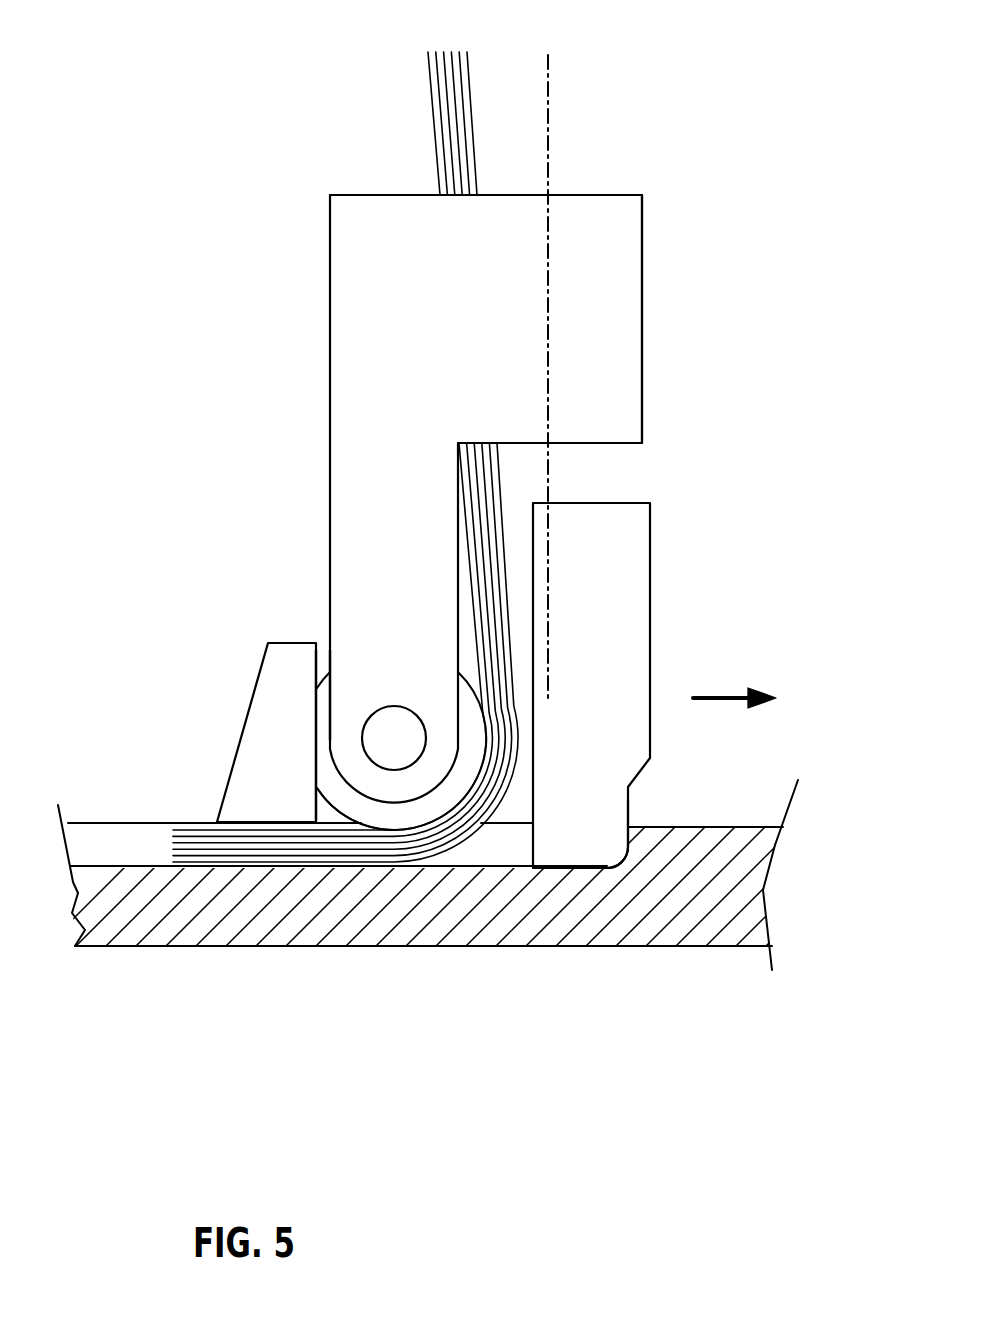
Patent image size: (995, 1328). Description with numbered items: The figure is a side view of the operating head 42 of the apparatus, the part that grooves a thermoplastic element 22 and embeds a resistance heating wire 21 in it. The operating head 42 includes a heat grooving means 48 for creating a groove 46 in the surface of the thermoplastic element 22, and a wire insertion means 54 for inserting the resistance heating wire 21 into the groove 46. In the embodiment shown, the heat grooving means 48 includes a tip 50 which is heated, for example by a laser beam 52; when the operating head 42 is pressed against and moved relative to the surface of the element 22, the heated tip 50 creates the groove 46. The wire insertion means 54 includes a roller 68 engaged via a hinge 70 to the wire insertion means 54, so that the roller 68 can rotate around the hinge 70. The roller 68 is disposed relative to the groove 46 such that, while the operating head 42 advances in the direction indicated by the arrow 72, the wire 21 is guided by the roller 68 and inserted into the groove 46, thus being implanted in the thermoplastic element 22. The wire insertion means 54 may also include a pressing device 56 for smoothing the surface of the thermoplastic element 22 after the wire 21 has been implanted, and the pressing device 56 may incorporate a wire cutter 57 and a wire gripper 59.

The resistance heating wire 21 is at (430, 90).
The thermoplastic element 22 is at (648, 948).
The operating head 42 is at (776, 127).
The groove 46 is at (110, 857).
The heat grooving means 48 is at (649, 796).
The tip 50 is at (640, 598).
The laser beam 52 is at (548, 98).
The wire insertion means 54 is at (642, 303).
The pressing device 56 is at (268, 670).
The wire cutter 57 is at (299, 674).
The wire gripper 59 is at (292, 688).
The roller 68 is at (338, 793).
The hinge 70 is at (392, 755).
The arrow 72 is at (734, 686).